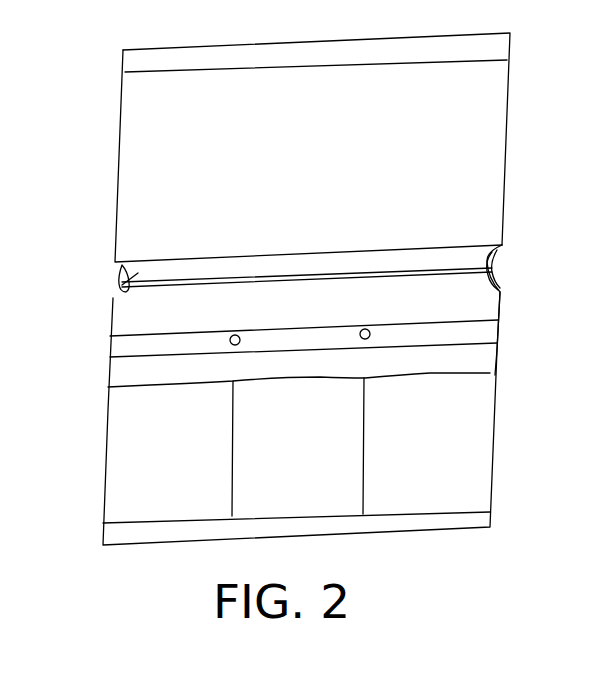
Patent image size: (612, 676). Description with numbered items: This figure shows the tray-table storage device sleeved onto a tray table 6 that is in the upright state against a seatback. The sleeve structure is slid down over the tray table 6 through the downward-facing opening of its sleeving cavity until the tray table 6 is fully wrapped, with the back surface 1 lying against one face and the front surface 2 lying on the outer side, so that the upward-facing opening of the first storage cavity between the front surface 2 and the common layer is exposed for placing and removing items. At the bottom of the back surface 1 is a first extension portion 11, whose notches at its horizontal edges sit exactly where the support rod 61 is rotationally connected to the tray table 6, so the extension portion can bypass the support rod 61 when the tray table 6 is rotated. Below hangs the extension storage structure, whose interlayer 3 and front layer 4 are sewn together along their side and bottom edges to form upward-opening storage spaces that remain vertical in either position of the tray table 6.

The back surface 1 is at (510, 42).
The front surface 2 is at (497, 140).
The interlayer 3 is at (120, 348).
The front layer 4 is at (122, 430).
The tray table 6 is at (118, 290).
The first extension portion 11 is at (497, 315).
The support rod 61 is at (125, 275).